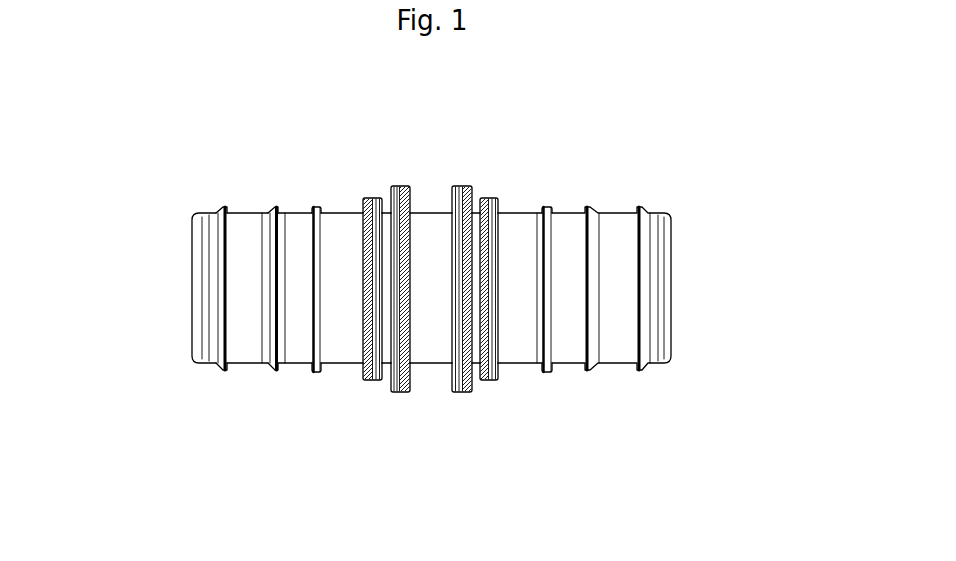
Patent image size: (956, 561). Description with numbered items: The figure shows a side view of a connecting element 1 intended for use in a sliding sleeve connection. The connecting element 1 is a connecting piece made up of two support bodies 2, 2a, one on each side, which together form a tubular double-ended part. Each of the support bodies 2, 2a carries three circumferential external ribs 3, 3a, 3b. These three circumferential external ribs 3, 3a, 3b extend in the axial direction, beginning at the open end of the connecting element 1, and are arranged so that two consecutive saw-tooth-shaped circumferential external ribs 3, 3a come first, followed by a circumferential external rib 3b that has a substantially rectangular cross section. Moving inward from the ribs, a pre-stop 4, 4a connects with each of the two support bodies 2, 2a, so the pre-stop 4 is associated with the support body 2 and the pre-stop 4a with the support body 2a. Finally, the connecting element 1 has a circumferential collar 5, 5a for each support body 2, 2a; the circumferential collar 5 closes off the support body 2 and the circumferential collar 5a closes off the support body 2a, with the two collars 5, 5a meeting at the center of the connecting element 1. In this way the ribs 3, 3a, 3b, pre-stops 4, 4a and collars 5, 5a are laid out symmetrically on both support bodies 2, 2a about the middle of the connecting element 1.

The connecting element 1 is at (690, 131).
The support body 2 is at (338, 242).
The support body 2a is at (529, 242).
The circumferential external rib 3 is at (220, 355).
The circumferential external rib 3a is at (275, 353).
The circumferential external rib 3b is at (318, 362).
The pre-stop 4 is at (375, 222).
The pre-stop 4a is at (490, 366).
The circumferential collar 5 is at (398, 197).
The circumferential collar 5a is at (463, 374).